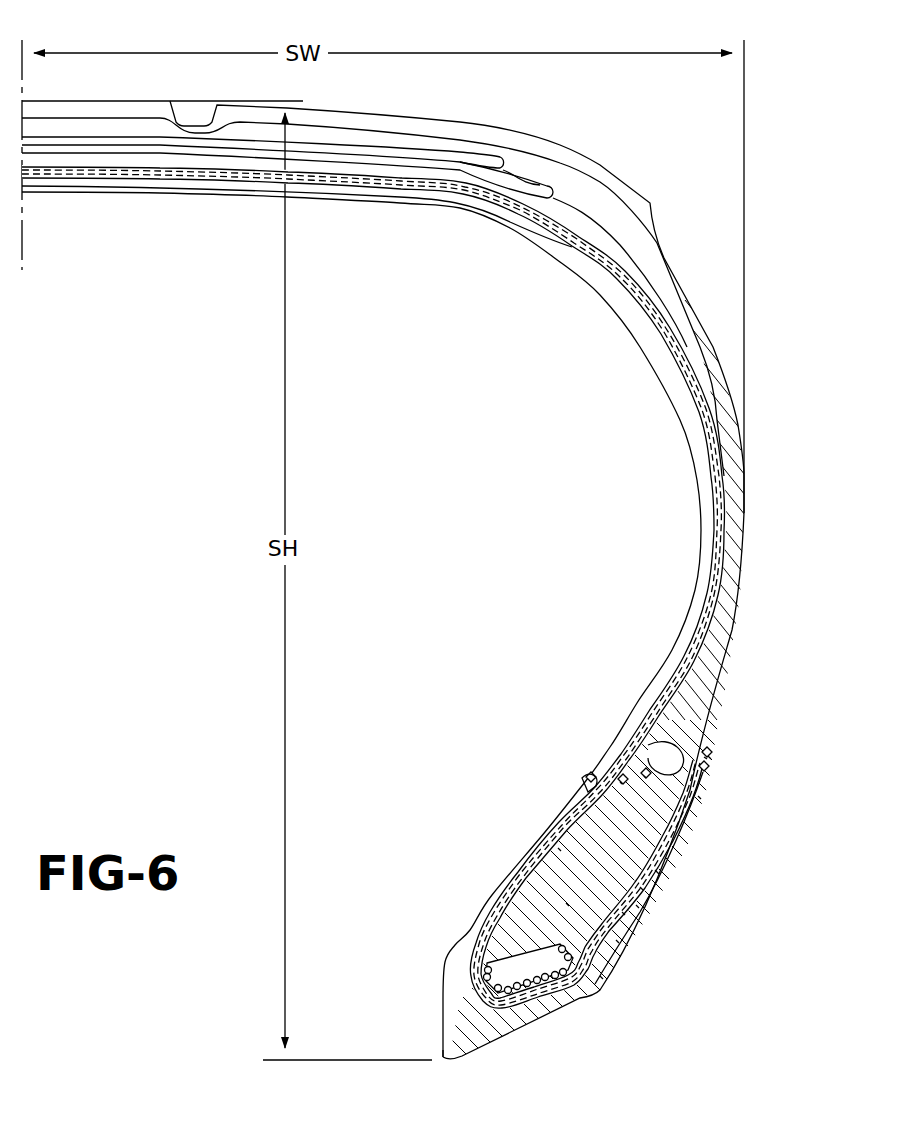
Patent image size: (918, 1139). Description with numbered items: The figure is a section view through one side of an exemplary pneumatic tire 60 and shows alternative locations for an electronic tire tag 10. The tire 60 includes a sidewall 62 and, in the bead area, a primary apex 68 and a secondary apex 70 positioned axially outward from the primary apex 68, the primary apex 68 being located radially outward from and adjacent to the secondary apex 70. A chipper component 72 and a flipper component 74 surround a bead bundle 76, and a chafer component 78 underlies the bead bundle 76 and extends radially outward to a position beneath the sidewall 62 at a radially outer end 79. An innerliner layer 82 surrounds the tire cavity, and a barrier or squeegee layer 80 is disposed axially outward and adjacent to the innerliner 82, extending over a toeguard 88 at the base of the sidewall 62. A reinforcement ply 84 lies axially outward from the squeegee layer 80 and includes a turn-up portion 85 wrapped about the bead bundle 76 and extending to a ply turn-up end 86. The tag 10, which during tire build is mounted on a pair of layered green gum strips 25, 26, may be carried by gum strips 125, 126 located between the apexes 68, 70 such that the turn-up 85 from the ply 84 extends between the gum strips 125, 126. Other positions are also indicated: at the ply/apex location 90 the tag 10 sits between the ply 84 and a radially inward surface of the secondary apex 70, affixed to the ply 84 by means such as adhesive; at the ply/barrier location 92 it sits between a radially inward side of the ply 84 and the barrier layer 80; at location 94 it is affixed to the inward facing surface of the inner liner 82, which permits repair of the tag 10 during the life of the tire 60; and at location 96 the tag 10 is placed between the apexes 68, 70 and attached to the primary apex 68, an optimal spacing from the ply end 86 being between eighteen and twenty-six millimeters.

The pneumatic tire 60 is at (566, 556).
The sidewall 62 is at (732, 634).
The squeegee layer 80 is at (697, 640).
The innerliner layer 82 is at (697, 605).
The reinforcement ply 84 is at (720, 572).
The primary apex 68 is at (664, 840).
The ply turn-up end 86 is at (660, 872).
The green gum strip 26 is at (642, 888).
The turn-up portion 85 is at (638, 905).
The green gum strip 25 is at (625, 913).
The chipper component 72 is at (617, 940).
The flipper component 74 is at (602, 977).
The bead bundle 76 is at (518, 973).
The secondary apex 70 is at (568, 905).
The chafer component 78 is at (560, 850).
The toeguard 88 is at (443, 1062).
The electronic tire tag 10 is at (668, 745).
The ply/apex location 90 is at (646, 773).
The ply/barrier location 92 is at (618, 780).
The inner liner tag position 94 is at (590, 784).
The apex mounted tag position 96 is at (712, 758).
The radially outer end 79 is at (708, 757).
The gum strip 125 is at (757, 810).
The gum strip 126 is at (700, 797).